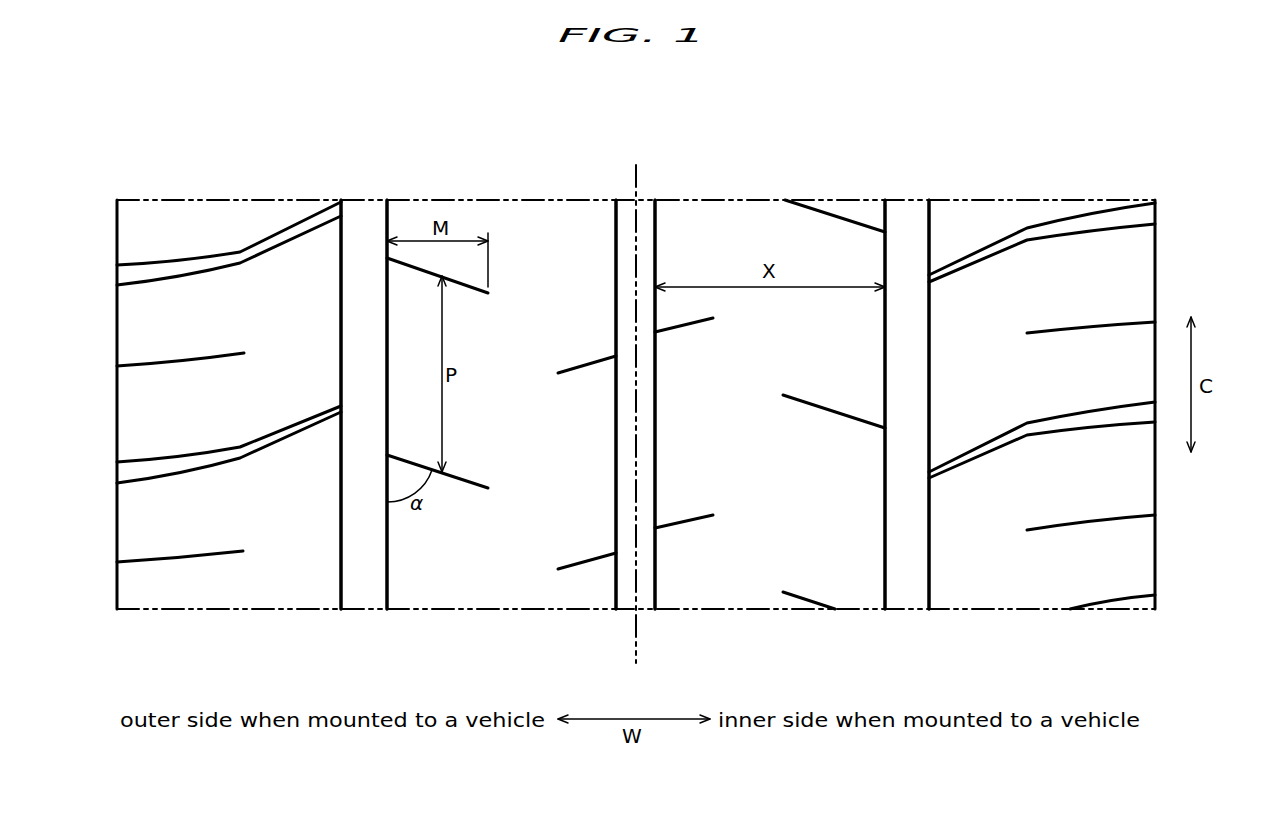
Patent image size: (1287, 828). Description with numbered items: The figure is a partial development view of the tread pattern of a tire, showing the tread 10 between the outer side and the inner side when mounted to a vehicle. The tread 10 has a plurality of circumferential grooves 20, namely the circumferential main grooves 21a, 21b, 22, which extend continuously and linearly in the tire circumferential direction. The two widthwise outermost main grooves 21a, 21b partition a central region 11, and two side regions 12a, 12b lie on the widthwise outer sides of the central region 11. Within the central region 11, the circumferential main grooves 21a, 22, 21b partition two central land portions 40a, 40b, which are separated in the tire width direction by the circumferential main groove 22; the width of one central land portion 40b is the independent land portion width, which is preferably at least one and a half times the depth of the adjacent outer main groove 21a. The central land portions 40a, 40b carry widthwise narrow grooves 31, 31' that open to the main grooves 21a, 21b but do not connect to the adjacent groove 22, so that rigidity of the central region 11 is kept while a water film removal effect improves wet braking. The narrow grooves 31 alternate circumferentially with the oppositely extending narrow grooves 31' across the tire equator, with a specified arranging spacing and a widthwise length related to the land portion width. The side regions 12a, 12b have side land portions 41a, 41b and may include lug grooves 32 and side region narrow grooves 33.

The tread 10 is at (1112, 178).
The central region 11 is at (903, 133).
The side region 12a is at (360, 133).
The side region 12b is at (1155, 133).
The circumferential grooves 20 is at (637, 434).
The circumferential main groove 21a is at (363, 590).
The circumferential main groove 21b is at (907, 590).
The circumferential main groove 22 is at (628, 595).
The widthwise narrow groove 31 is at (501, 413).
The widthwise narrow groove 31' is at (770, 404).
The lug groove 32 is at (255, 450).
The side region narrow groove 33 is at (180, 562).
The central land portion 40a is at (520, 225).
The central land portion 40b is at (720, 220).
The side land portion 41a is at (222, 217).
The side land portion 41b is at (990, 217).